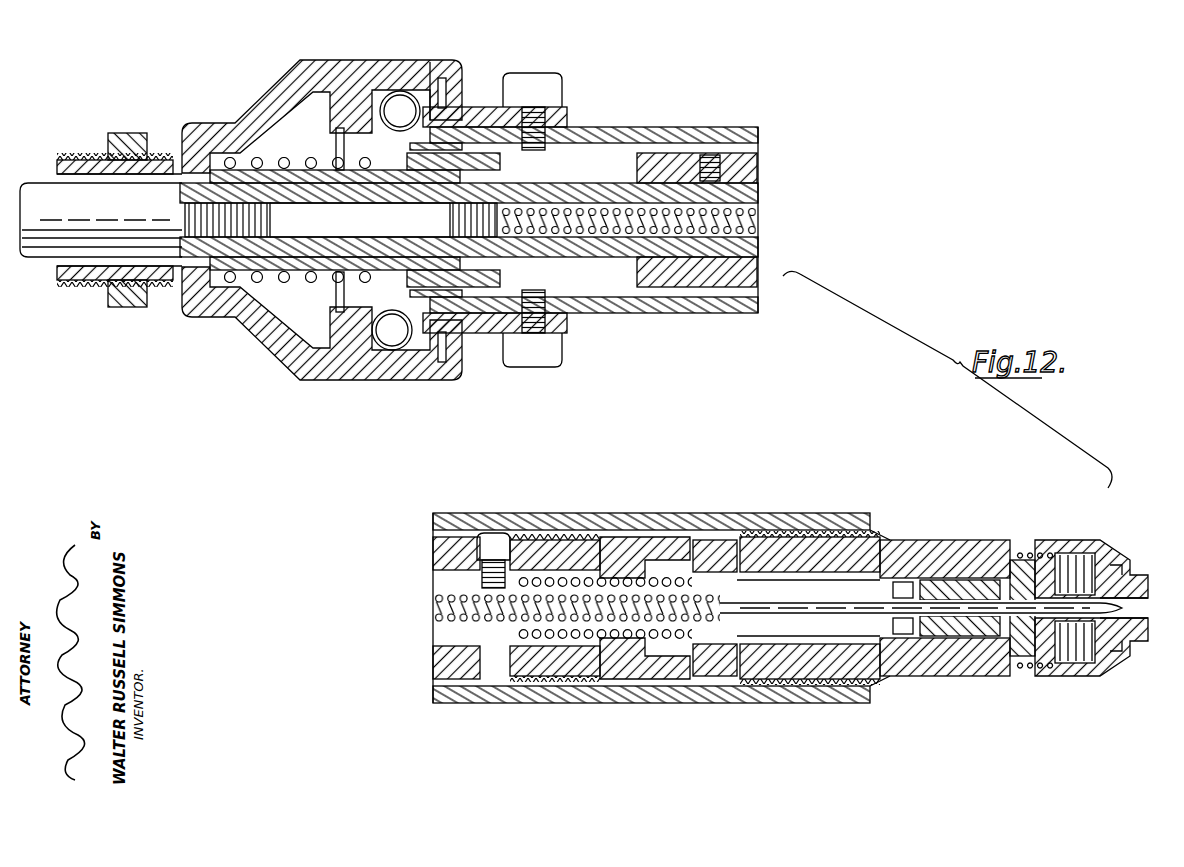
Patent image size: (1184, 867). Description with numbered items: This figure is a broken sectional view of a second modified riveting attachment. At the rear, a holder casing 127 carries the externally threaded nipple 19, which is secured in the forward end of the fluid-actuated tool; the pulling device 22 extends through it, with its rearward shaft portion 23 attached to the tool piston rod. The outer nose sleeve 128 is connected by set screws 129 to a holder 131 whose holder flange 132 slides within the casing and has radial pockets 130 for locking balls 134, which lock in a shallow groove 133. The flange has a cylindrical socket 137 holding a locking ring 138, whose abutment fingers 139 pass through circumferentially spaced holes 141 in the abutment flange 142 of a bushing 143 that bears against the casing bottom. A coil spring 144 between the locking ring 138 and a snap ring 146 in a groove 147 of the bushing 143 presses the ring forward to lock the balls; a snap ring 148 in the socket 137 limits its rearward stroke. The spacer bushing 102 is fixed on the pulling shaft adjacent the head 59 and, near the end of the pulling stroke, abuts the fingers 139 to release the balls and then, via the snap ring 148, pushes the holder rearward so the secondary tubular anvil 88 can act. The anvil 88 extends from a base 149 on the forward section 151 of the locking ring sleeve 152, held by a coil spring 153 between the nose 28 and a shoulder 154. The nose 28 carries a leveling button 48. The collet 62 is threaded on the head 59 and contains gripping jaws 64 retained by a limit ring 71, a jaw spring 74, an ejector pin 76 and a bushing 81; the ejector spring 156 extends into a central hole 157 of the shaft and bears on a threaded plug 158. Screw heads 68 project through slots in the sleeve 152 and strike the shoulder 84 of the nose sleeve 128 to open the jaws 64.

The externally threaded nipple 19 is at (74, 287).
The pulling device 22 is at (522, 548).
The rearward shaft portion 23 is at (292, 251).
The nose 28 is at (1114, 548).
The leveling button 48 is at (1140, 650).
The head 59 is at (500, 660).
The collet 62 is at (900, 548).
The gripping jaws 64 is at (948, 640).
The screws 68 is at (714, 540).
The limit ring 71 is at (905, 636).
The jaw spring 74 is at (666, 640).
The ejector pin 76 is at (1122, 604).
The bushing 81 is at (440, 625).
The shoulder 84 is at (748, 545).
The tubular anvil 88 is at (1126, 615).
The spacer bushing 102 is at (708, 292).
The holder casing 127 is at (362, 300).
The outer nose sleeve 128 is at (642, 128).
The set screws 129 is at (556, 104).
The radial pockets 130 is at (392, 330).
The holder 131 is at (474, 106).
The holder flange 132 is at (440, 62).
The shallow groove 133 is at (442, 362).
The locking balls 134 is at (392, 352).
The cylindrical socket 137 is at (330, 376).
The locking ring 138 is at (392, 135).
The abutment fingers 139 is at (503, 160).
The circumferentially spaced holes 141 is at (440, 170).
The abutment flange 142 is at (400, 111).
The bushing 143 is at (335, 178).
The coil spring 144 is at (298, 158).
The snap ring 146 is at (214, 290).
The groove 147 is at (227, 217).
The snap ring 148 is at (336, 302).
The base 149 is at (1044, 656).
The forward section 151 is at (988, 660).
The locking ring sleeve 152 is at (792, 682).
The coil spring 153 is at (1076, 665).
The shoulder 154 is at (1032, 552).
The ejector spring 156 is at (760, 222).
The central hole 157 is at (607, 234).
The threaded plug 158 is at (462, 220).